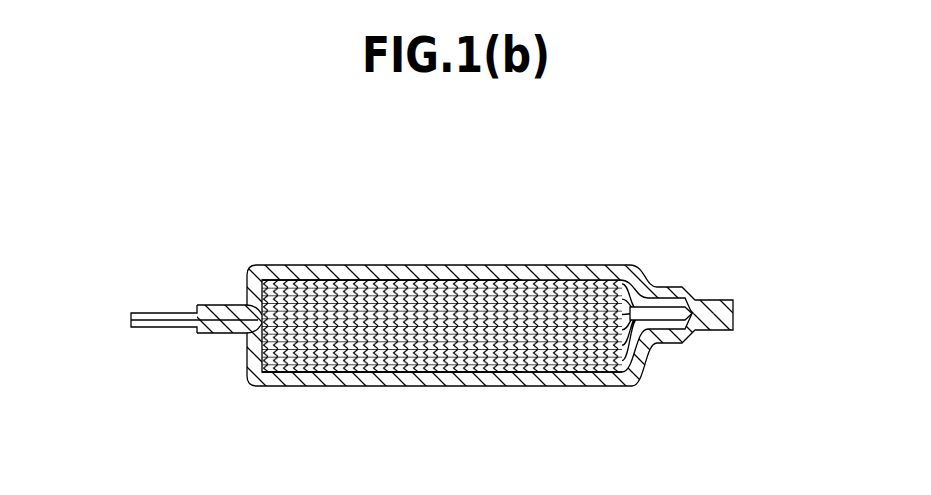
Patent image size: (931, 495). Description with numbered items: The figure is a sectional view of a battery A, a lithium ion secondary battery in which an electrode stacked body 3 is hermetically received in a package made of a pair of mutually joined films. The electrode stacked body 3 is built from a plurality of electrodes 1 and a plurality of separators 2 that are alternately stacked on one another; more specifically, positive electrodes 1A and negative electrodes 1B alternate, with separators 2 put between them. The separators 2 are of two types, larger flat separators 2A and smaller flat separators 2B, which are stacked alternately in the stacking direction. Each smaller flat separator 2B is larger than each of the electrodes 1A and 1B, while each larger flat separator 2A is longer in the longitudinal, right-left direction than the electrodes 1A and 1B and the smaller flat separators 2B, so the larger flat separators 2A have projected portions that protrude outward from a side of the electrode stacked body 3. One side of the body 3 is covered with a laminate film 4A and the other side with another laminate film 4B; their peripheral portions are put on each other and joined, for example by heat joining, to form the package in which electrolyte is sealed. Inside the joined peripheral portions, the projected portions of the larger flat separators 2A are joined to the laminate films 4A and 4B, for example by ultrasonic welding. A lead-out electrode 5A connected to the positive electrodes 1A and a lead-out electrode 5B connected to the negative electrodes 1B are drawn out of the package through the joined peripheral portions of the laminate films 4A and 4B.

The electrodes 1 is at (391, 250).
The positive electrodes 1A is at (515, 176).
The negative electrodes 1B is at (285, 283).
The separators 2 is at (647, 261).
The larger flat separator 2A is at (530, 285).
The smaller flat separator 2B is at (640, 277).
The electrode stacked body 3 is at (388, 374).
The laminate film 4A is at (252, 268).
The laminate film 4B is at (253, 373).
The lead-out electrode 5A is at (152, 321).
The lead-out electrode 5B is at (163, 366).
The battery A is at (433, 306).